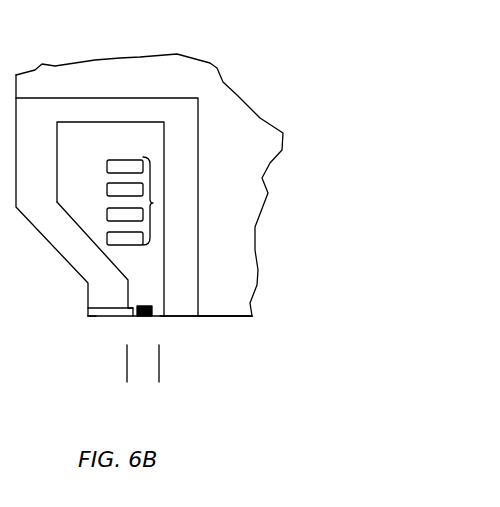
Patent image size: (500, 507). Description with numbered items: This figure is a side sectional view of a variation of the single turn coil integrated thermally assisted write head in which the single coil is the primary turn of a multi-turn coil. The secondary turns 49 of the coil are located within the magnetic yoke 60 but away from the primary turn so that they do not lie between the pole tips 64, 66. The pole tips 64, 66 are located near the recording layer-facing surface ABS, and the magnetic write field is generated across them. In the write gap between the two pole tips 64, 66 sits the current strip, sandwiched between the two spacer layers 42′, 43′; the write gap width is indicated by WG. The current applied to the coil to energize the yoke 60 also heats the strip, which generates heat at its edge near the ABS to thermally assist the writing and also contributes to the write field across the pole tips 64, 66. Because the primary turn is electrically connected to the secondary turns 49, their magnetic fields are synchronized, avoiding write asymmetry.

The yoke 60 is at (182, 135).
The secondary turns 49 is at (153, 203).
The spacer layer 43′ is at (155, 307).
The pole tip 66 is at (95, 316).
The spacer layer 42′ is at (130, 317).
The recording layer-facing surface ABS is at (180, 318).
The pole tip 64 is at (243, 320).
The write gap width WG is at (192, 366).